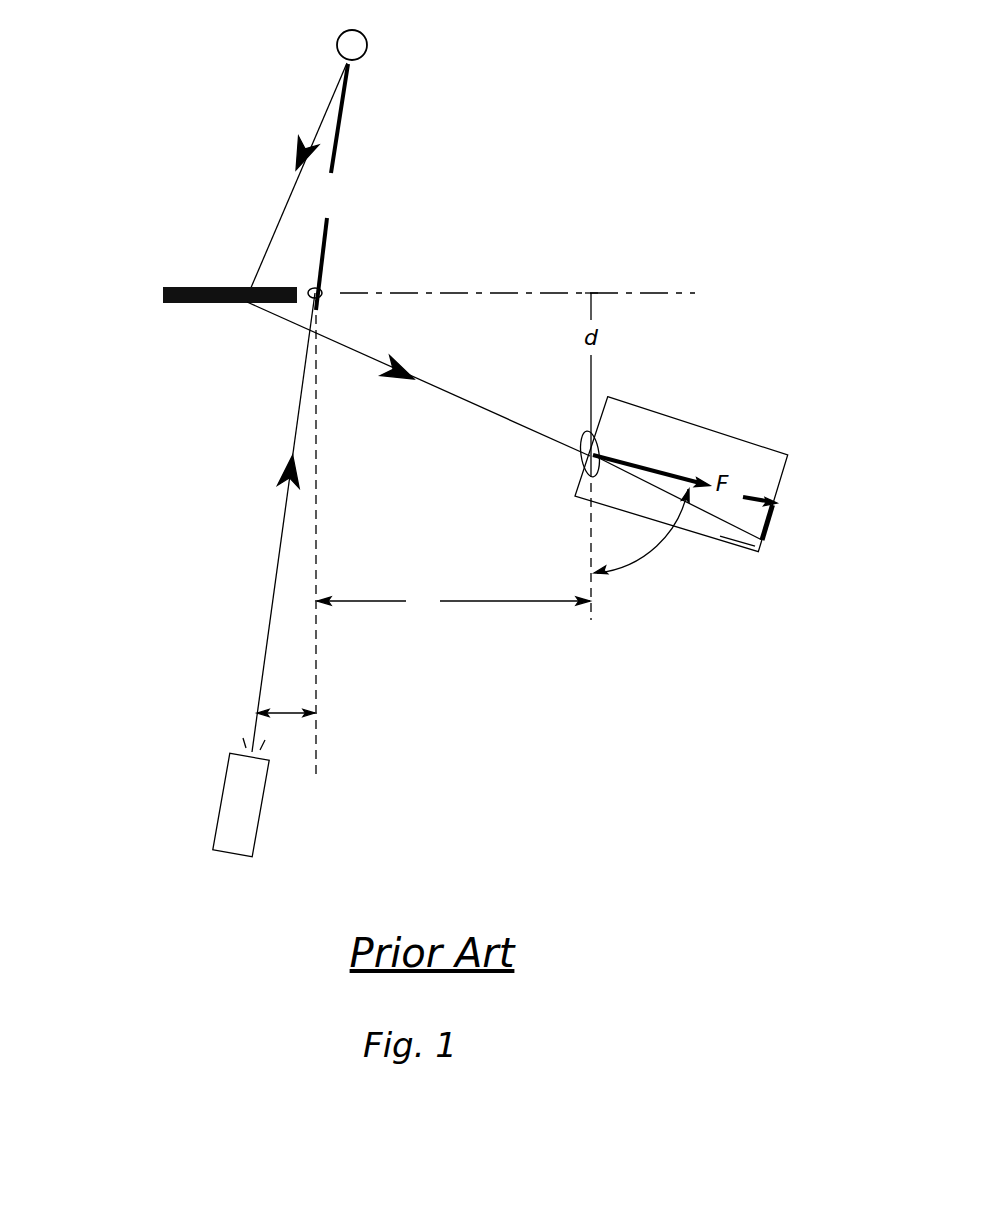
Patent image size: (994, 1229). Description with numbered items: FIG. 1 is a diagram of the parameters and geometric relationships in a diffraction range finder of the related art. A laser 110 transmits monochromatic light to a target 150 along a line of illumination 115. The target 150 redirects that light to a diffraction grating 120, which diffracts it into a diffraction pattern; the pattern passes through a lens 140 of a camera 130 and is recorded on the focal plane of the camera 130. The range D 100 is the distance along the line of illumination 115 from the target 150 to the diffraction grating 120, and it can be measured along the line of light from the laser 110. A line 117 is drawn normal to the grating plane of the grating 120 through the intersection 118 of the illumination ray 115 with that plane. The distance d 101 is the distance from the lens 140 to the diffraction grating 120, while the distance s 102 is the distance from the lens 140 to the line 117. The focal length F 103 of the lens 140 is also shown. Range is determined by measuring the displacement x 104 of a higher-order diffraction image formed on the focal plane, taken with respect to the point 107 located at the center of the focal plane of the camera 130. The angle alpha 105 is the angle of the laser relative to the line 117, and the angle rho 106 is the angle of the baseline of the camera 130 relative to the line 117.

The distance D 100 is at (350, 183).
The distance d 101 is at (600, 370).
The distance s 102 is at (402, 623).
The focal length F 103 is at (660, 457).
The displacement x 104 is at (773, 520).
The angle alpha 105 is at (281, 687).
The angle rho 106 is at (637, 548).
The center point of focal plane 107 is at (773, 507).
The laser 110 is at (215, 848).
The line of illumination 115 is at (274, 590).
The normal line 117 is at (318, 678).
The intersection 118 is at (322, 290).
The diffraction grating 120 is at (172, 305).
The camera 130 is at (733, 548).
The lens 140 is at (582, 457).
The target 150 is at (368, 47).